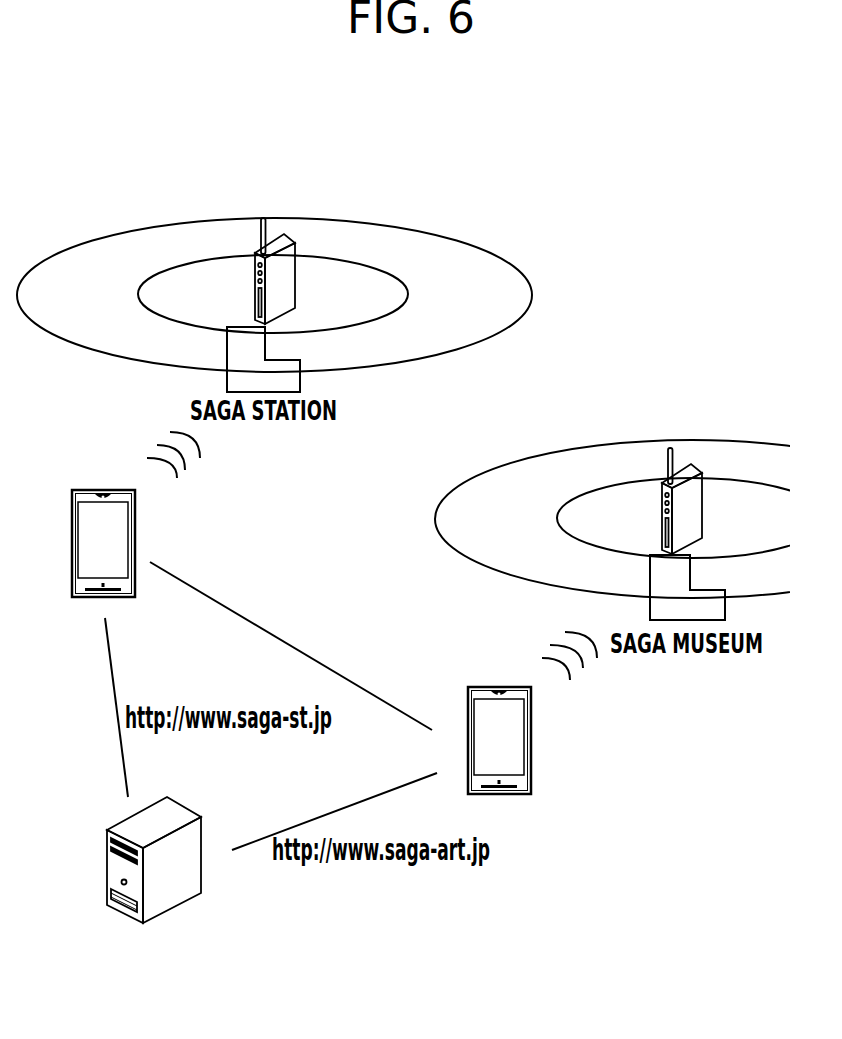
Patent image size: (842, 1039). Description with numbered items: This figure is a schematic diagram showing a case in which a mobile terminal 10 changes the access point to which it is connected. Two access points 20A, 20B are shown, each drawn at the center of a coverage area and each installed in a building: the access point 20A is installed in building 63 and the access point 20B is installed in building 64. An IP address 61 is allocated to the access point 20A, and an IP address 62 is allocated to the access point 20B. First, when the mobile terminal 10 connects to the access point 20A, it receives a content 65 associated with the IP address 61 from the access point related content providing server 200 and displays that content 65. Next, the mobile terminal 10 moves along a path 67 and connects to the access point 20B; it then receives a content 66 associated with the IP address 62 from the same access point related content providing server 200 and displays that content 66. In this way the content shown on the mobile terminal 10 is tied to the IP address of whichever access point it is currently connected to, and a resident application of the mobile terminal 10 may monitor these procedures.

The mobile terminal 10 is at (137, 503).
The access point 20A is at (705, 490).
The access point 20B is at (298, 260).
The IP address 61 is at (670, 403).
The IP address 62 is at (270, 181).
The building 63 is at (727, 592).
The building 64 is at (302, 366).
The content 65 is at (380, 794).
The content 66 is at (113, 672).
The path 67 is at (303, 650).
The access point related content providing server 200 is at (185, 808).